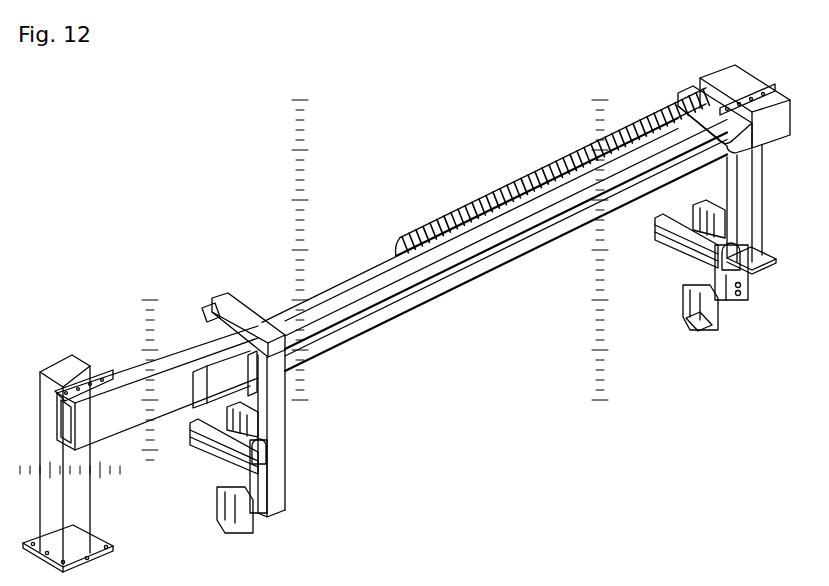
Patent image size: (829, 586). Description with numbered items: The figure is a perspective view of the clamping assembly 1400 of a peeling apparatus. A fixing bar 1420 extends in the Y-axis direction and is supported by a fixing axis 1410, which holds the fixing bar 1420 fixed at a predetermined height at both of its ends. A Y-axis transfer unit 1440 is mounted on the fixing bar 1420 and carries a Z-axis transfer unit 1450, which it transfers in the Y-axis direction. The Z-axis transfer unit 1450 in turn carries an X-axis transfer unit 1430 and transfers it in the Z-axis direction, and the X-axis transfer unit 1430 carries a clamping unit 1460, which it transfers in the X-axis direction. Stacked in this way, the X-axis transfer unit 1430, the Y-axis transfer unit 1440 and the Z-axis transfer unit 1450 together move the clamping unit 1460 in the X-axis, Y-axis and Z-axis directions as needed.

The clamping assembly 1400 is at (402, 140).
The fixing axis 1410 is at (65, 372).
The fixing bar 1420 is at (180, 362).
The X-axis transfer unit 1430 is at (677, 258).
The Y-axis transfer unit 1440 is at (373, 315).
The Z-axis transfer unit 1450 is at (657, 243).
The clamping unit 1460 is at (732, 312).